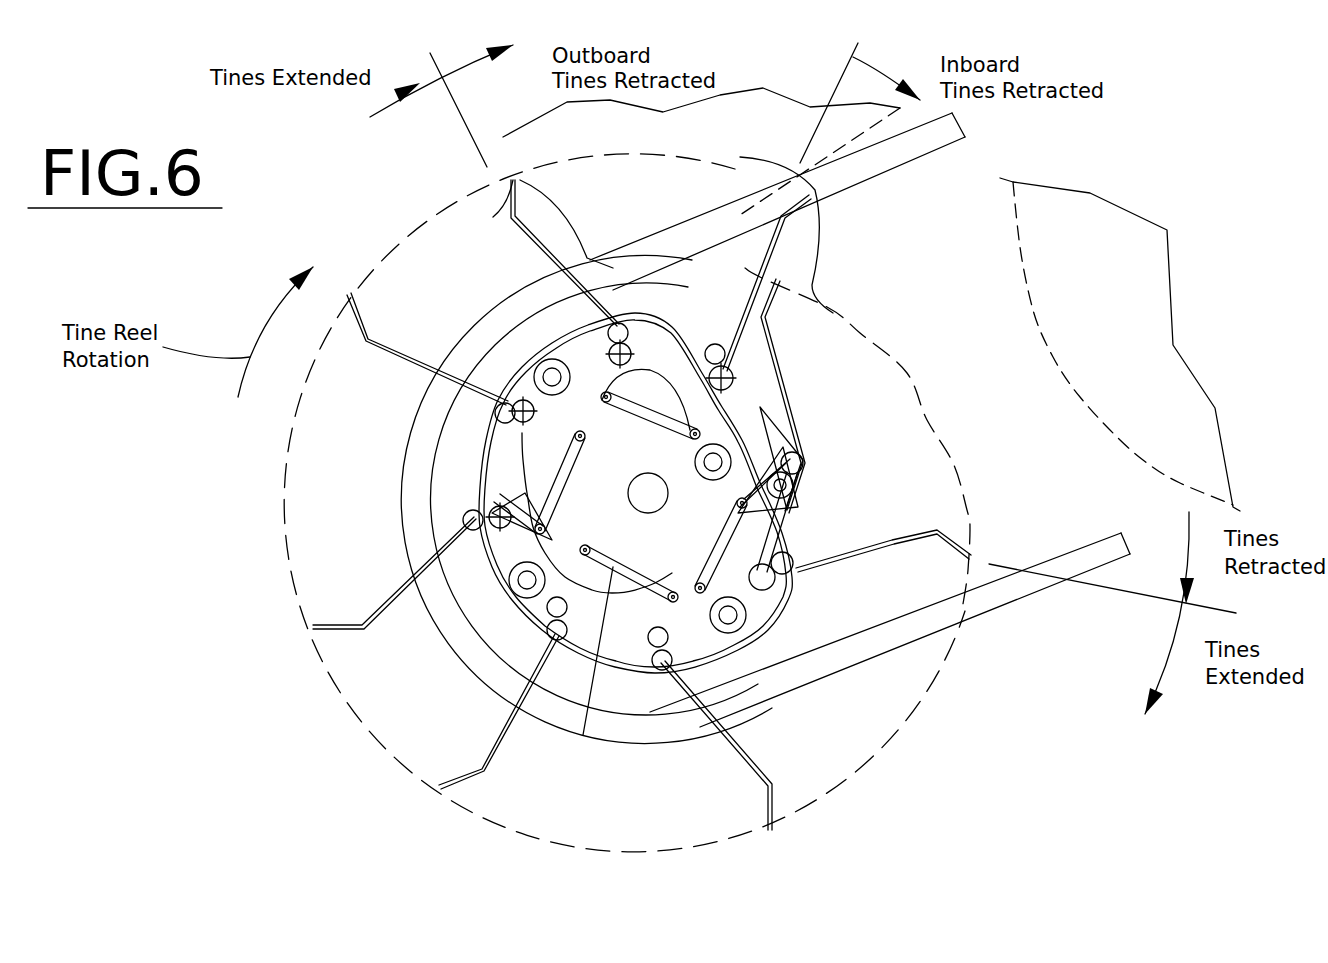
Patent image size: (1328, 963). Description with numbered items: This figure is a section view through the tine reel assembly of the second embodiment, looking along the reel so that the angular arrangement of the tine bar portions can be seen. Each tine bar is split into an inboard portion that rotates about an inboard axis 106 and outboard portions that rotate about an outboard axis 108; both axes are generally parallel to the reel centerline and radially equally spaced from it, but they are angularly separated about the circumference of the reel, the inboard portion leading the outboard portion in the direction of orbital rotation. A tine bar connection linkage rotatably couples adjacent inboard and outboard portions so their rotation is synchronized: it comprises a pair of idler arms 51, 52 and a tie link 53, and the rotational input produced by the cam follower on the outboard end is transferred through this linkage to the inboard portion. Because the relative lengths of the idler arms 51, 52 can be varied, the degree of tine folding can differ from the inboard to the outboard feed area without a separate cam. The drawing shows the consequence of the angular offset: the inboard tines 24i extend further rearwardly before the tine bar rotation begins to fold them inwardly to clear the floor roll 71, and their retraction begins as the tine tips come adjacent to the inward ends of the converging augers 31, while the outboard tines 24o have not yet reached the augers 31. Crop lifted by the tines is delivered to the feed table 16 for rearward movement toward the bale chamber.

The feed table 16 is at (890, 160).
The outboard tines 24o is at (470, 203).
The inboard tines 24i is at (400, 352).
The converging augers 31 is at (720, 95).
The idler arm 51 is at (572, 420).
The idler arm 52 is at (487, 580).
The tie link 53 is at (562, 482).
The floor roll 71 is at (1121, 261).
The inboard axis 106 is at (523, 400).
The outboard axis 108 is at (630, 352).